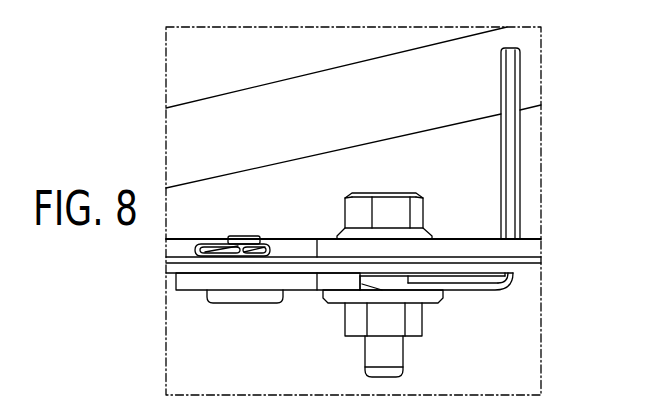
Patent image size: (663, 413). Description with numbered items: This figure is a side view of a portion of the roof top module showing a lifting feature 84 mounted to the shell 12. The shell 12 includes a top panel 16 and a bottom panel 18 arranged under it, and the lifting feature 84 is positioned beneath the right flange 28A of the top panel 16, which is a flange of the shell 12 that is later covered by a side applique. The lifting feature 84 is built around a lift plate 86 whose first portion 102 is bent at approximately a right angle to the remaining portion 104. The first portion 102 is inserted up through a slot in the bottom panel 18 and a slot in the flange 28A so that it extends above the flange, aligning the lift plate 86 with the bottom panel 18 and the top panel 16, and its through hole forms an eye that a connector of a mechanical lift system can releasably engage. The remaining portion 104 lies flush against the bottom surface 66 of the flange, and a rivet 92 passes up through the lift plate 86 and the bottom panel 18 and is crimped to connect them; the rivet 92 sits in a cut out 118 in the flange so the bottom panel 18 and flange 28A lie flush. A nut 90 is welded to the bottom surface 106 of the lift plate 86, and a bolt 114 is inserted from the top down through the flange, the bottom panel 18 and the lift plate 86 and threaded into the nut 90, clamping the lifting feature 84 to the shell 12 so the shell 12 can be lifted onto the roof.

The shell 12 is at (143, 96).
The top panel 16 is at (459, 135).
The bottom panel 18 is at (532, 266).
The right flange 28A is at (525, 248).
The bottom surface 66 is at (520, 282).
The lifting feature 84 is at (565, 157).
The lift plate 86 is at (318, 274).
The nut 90 is at (415, 319).
The rivet 92 is at (240, 243).
The first portion 102 is at (526, 86).
The remaining portion 104 is at (291, 300).
The bottom surface 106 is at (189, 297).
The bolt 114 is at (388, 209).
The cut out 118 is at (302, 250).